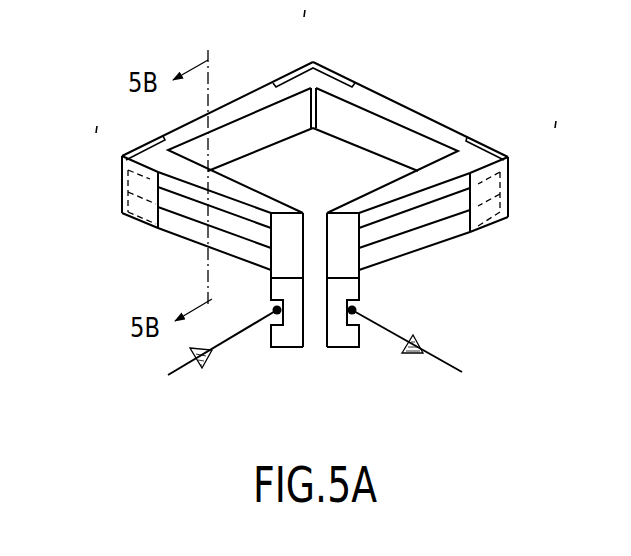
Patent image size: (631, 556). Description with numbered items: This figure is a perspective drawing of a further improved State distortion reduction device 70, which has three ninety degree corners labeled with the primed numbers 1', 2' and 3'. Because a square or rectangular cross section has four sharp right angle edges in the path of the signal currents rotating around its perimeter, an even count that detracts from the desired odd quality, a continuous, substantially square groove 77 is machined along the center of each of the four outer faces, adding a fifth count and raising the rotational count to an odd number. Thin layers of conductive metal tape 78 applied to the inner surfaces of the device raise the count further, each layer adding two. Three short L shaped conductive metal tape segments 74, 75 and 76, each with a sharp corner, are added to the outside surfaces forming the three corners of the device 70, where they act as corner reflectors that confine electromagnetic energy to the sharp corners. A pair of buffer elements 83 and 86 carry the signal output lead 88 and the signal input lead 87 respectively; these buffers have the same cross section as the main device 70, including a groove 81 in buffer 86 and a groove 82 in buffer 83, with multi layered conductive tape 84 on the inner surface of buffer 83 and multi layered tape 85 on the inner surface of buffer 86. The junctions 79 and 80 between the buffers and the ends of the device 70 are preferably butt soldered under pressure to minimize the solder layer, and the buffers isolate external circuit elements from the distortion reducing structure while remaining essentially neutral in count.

The State distortion reduction device 70 is at (425, 101).
The L shaped conductive metal tape segment 75 is at (343, 67).
The corner 2' is at (300, 33).
The corner 1' is at (511, 139).
The corner 3' is at (121, 142).
The L shaped conductive metal tape segment 74 is at (513, 187).
The L shaped conductive metal tape segment 76 is at (119, 185).
The groove 77 is at (198, 206).
The conductive metal tape 78 is at (372, 138).
The junction 79 is at (352, 218).
The junction 80 is at (286, 220).
The groove 81 is at (268, 312).
The groove 82 is at (362, 310).
The buffer element 83 is at (366, 353).
The multi layered conductive tape 84 is at (328, 353).
The multi layered tape 85 is at (305, 353).
The buffer element 86 is at (266, 353).
The signal input lead 87 is at (187, 368).
The signal output lead 88 is at (443, 369).